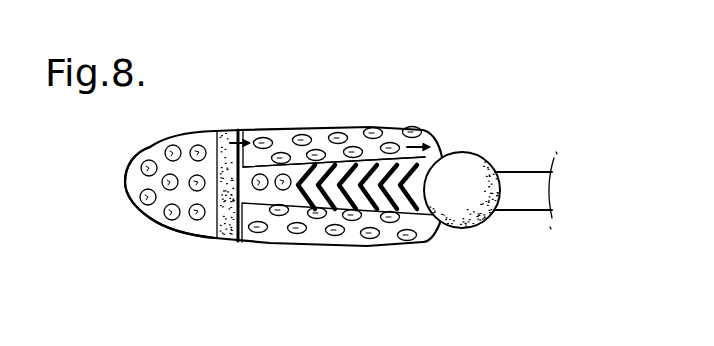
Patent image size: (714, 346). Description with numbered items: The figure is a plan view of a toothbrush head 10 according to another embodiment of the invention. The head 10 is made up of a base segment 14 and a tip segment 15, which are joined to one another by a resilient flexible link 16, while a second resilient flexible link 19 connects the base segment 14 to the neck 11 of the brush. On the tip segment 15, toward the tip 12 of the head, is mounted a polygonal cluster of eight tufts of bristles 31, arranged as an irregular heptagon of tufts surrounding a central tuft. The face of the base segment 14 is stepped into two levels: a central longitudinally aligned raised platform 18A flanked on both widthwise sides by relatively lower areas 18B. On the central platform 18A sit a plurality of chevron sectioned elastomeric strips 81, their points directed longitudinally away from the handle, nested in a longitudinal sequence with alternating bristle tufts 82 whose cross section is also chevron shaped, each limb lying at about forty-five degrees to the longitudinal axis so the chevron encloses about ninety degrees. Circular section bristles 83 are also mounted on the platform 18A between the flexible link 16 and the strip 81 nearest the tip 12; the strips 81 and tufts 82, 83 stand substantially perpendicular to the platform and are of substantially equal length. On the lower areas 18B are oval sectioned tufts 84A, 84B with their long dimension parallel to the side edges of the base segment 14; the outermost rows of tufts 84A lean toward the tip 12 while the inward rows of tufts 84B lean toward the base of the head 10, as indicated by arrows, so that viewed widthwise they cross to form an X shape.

The toothbrush head 10 is at (132, 225).
The neck 11 is at (527, 182).
The tip 12 is at (125, 183).
The base segment 14 is at (328, 249).
The tip segment 15 is at (168, 236).
The resilient flexible link 16 is at (217, 236).
The central longitudinally aligned raised platform 18A is at (250, 132).
The lower areas 18B is at (303, 165).
The resilient flexible link 19 is at (474, 226).
The tufts of bristles 31 is at (168, 149).
The chevron sectioned elastomeric strips 81 is at (338, 162).
The bristle tufts 82 is at (372, 134).
The circular section bristles 83 is at (259, 190).
The bristle tufts 84A is at (412, 128).
The bristle tufts 84B is at (390, 144).